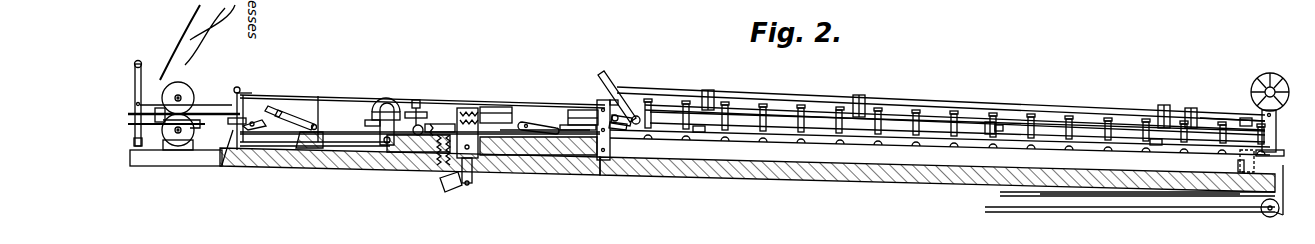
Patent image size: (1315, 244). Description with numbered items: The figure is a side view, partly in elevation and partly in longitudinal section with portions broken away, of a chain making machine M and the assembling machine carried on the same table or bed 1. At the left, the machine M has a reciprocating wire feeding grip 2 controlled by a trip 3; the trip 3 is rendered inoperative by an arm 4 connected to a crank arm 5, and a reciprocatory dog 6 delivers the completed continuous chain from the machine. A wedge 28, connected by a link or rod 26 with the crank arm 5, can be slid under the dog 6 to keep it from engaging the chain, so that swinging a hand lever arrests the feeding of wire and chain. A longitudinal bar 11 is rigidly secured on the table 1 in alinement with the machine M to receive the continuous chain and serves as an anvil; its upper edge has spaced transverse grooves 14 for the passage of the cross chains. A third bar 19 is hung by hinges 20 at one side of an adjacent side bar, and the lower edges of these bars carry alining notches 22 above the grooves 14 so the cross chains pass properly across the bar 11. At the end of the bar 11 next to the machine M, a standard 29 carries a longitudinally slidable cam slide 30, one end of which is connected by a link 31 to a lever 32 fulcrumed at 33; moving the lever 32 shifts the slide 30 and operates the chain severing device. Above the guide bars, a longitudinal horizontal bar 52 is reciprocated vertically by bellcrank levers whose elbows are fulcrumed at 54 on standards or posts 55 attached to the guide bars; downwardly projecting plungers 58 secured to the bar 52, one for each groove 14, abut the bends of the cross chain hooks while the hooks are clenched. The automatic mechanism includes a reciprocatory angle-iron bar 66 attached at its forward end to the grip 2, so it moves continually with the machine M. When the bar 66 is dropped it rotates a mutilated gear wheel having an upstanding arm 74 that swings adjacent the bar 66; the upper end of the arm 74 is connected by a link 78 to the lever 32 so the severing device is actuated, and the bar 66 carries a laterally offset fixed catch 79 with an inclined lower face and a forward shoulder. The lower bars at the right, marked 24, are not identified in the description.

The table or bed 1 is at (608, 172).
The wire feeding grip 2 is at (143, 91).
The trip 3 is at (247, 122).
The arm 4 is at (222, 165).
The crank arm 5 is at (233, 100).
The reciprocatory dog 6 is at (538, 130).
The longitudinal bar 11 is at (857, 155).
The transverse grooves 14 is at (917, 144).
The third bar 19 is at (745, 141).
The hinges 20 is at (698, 132).
The notches or recesses 22 is at (950, 142).
The lower bars 24 is at (1267, 174).
The link or rod 26 is at (443, 107).
The wedge 28 is at (522, 126).
The standard 29 is at (590, 105).
The slide 30 is at (555, 116).
The link 31 is at (638, 96).
The lever 32 is at (610, 80).
The fulcrum 33 is at (638, 116).
The longitudinal horizontal bar 52 is at (820, 116).
The fulcrum 54 is at (723, 97).
The standards or posts 55 is at (854, 97).
The plungers 58 is at (977, 122).
The reciprocatory longitudinal bar 66 is at (566, 100).
The upstanding arm 74 is at (1198, 122).
The link or rod 78 is at (1058, 107).
The fixed catch 79 is at (1205, 123).
The machine M is at (415, 86).